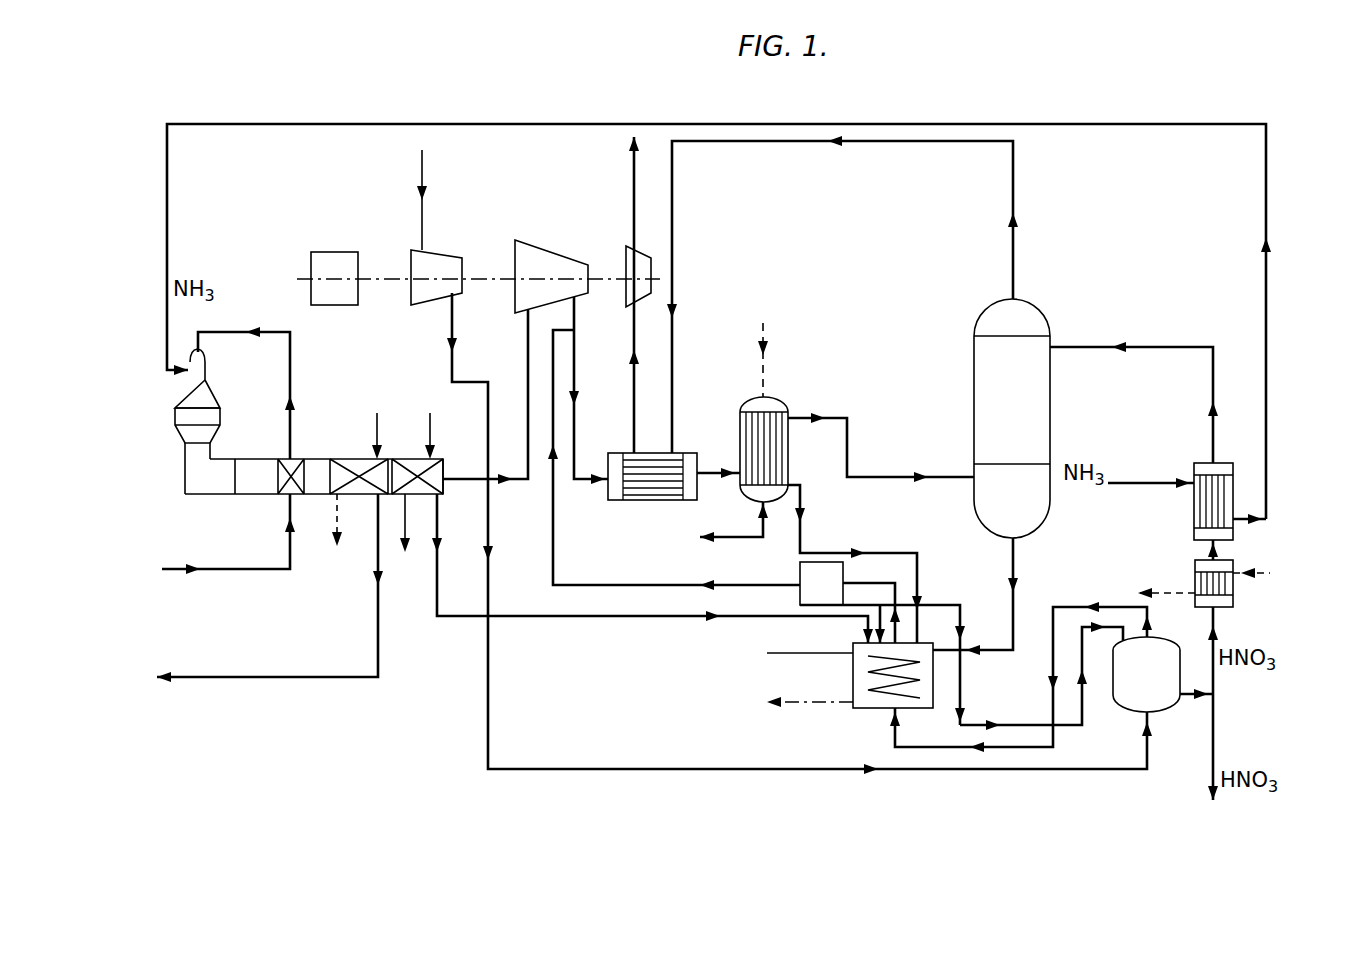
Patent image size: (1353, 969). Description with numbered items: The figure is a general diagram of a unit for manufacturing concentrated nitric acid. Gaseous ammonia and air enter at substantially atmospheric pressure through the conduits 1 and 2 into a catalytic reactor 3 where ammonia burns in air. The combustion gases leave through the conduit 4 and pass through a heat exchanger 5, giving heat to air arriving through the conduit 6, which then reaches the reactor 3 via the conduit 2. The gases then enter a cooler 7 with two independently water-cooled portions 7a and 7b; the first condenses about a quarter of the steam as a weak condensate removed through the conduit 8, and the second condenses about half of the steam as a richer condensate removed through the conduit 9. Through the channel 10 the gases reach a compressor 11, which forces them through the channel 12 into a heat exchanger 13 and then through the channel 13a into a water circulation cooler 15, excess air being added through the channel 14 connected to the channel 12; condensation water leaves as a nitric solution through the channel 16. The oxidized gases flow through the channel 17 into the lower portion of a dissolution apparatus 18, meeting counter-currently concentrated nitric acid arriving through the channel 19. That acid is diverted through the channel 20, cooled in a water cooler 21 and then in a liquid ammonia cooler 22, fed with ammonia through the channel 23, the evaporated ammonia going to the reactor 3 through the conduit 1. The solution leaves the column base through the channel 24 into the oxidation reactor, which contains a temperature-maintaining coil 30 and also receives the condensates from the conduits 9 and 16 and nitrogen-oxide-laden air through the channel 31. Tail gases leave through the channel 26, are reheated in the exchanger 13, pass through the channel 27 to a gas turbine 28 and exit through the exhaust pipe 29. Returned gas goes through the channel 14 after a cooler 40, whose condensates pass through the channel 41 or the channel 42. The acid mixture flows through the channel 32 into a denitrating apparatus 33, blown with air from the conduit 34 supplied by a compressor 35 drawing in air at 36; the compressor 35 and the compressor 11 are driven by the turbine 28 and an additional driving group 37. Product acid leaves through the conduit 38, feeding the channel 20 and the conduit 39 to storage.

The conduit 1 is at (1262, 302).
The conduit 2 is at (238, 332).
The catalytic reactor 3 is at (222, 412).
The conduit 4 is at (222, 494).
The heat exchanger 5 is at (288, 492).
The conduit 6 is at (232, 575).
The cooler 7 is at (388, 462).
The first cooler portion 7a is at (336, 494).
The second cooler portion 7b is at (440, 492).
The conduit 8 is at (380, 612).
The conduit 9 is at (438, 575).
The channel 10 is at (526, 470).
The compressor 11 is at (546, 256).
The channel 12 is at (576, 385).
The heat exchanger 13 is at (660, 505).
The channel 13a is at (727, 436).
The channel 14 is at (551, 518).
The water circulation cooler 15 is at (796, 448).
The channel 16 is at (802, 524).
The channel 17 is at (900, 470).
The dissolution apparatus 18 is at (1050, 450).
The channel 19 is at (1140, 345).
The channel 20 is at (1216, 677).
The water cooler 21 is at (1236, 592).
The liquid ammonia cooler 22 is at (1233, 480).
The channel 23 is at (1166, 488).
The channel 24 is at (1010, 640).
The channel 26 is at (678, 320).
The channel 27 is at (632, 342).
The gas turbine 28 is at (640, 262).
The exhaust pipe 29 is at (630, 176).
The temperature-maintaining coil 30 is at (870, 662).
The channel 31 is at (1078, 602).
The channel 32 is at (1006, 724).
The denitrating apparatus 33 is at (1157, 660).
The conduit 34 is at (464, 350).
The compressor 35 is at (432, 262).
The air intake 36 is at (420, 212).
The additional driving group 37 is at (340, 252).
The conduit 38 is at (1186, 700).
The conduit 39 is at (1216, 740).
The cooler 40 is at (806, 590).
The channel 41 is at (868, 624).
The channel 42 is at (932, 600).